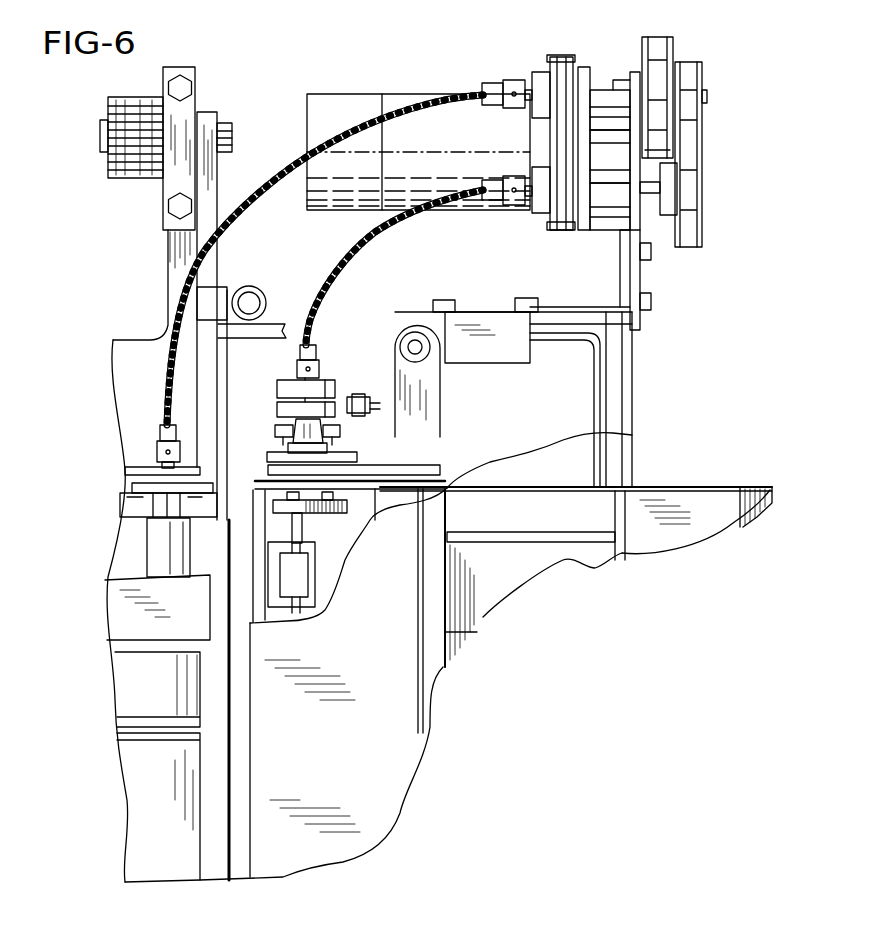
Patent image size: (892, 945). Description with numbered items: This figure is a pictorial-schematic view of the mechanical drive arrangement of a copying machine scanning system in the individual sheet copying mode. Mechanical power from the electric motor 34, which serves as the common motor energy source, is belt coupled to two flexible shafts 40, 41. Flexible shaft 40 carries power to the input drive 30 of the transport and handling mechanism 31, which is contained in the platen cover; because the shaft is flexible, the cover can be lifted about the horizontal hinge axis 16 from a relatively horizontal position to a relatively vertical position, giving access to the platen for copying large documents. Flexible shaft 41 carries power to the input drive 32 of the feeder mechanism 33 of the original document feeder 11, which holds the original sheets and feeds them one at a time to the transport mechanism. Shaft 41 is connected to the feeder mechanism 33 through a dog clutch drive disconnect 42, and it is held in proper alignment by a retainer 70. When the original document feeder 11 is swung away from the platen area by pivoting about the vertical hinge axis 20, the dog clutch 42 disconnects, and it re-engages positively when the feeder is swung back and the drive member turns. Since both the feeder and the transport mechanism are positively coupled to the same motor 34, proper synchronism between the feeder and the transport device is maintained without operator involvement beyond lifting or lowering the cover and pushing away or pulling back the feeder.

The original document feeder 11 is at (684, 470).
The horizontal hinge axis 16 is at (233, 138).
The vertical hinge axis 20 is at (412, 342).
The input drive of the transport and handling mechanism 30 is at (160, 546).
The transport and handling mechanism 31 is at (140, 770).
The input drive of the feeder mechanism 32 is at (330, 443).
The feeder mechanism 33 is at (252, 444).
The electric motor 34 is at (338, 106).
The flexible shaft 40 is at (245, 203).
The flexible shaft 41 is at (340, 280).
The dog clutch drive disconnect 42 is at (278, 410).
The retainer 70 is at (277, 380).